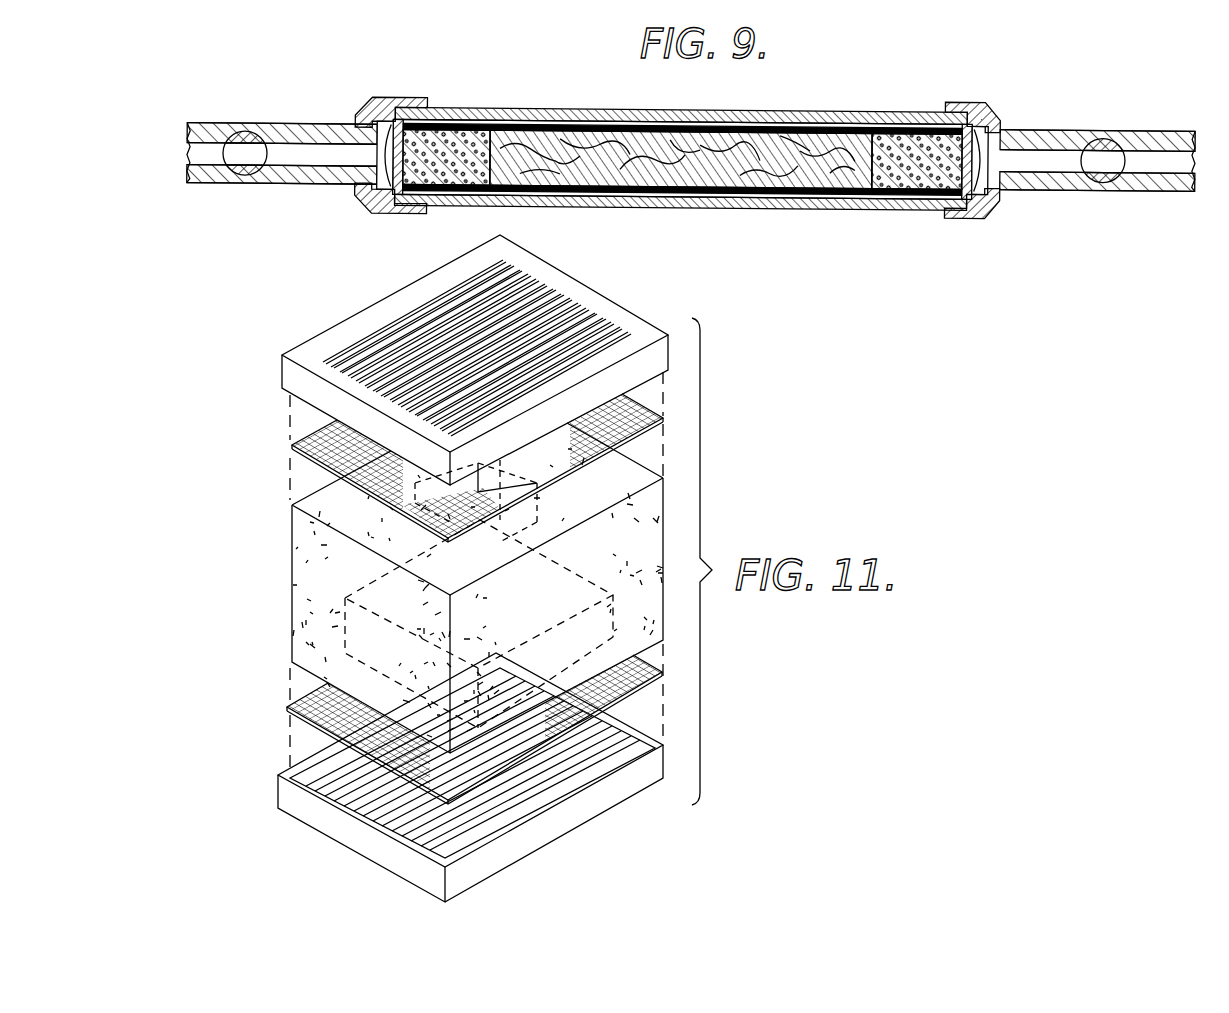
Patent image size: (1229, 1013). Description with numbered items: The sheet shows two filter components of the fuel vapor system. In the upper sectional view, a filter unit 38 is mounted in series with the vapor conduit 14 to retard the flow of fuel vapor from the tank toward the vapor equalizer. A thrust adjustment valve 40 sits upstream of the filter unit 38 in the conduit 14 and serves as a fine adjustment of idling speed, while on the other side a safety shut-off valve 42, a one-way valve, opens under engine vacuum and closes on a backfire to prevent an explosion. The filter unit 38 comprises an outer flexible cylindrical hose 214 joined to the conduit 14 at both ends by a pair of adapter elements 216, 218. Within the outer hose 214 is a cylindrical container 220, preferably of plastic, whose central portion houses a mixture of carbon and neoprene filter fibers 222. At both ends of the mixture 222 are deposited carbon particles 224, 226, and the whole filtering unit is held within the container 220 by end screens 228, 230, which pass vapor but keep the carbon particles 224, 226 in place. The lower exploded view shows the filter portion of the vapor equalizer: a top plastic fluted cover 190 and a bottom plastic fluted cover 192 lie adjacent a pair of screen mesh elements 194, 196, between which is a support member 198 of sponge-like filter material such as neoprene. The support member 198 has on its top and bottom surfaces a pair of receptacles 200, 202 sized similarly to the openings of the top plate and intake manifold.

In FIG. 9, the vapor conduit 14 is at (300, 189).
In FIG. 9, the filter unit 38 is at (858, 259).
In FIG. 9, the thrust adjustment valve 40 is at (262, 133).
In FIG. 9, the safety shut-off valve 42 is at (1103, 187).
In FIG. 9, the outer flexible cylindrical hose 214 is at (736, 113).
In FIG. 9, the adapter element 216 is at (993, 131).
In FIG. 9, the adapter element 218 is at (395, 206).
In FIG. 9, the cylindrical container 220 is at (763, 200).
In FIG. 9, the mixture of carbon and neoprene filter fibers 222 is at (855, 126).
In FIG. 9, the carbon particles 224 is at (970, 213).
In FIG. 9, the carbon particles 226 is at (452, 113).
In FIG. 9, the end screen 228 is at (985, 102).
In FIG. 9, the end screen 230 is at (420, 100).
In FIG. 11, the top plastic fluted cover 190 is at (620, 313).
In FIG. 11, the bottom plastic fluted cover 192 is at (583, 826).
In FIG. 11, the screen mesh element 194 is at (292, 446).
In FIG. 11, the screen mesh element 196 is at (290, 710).
In FIG. 11, the support member 198 is at (300, 594).
In FIG. 11, the receptacle 200 is at (483, 488).
In FIG. 11, the receptacle 202 is at (275, 648).